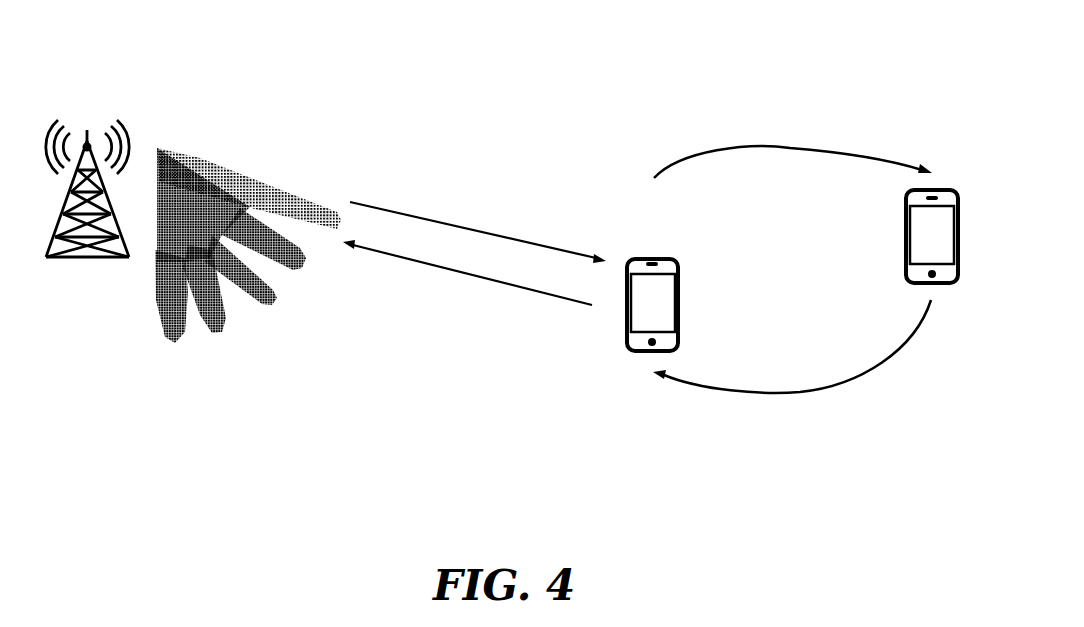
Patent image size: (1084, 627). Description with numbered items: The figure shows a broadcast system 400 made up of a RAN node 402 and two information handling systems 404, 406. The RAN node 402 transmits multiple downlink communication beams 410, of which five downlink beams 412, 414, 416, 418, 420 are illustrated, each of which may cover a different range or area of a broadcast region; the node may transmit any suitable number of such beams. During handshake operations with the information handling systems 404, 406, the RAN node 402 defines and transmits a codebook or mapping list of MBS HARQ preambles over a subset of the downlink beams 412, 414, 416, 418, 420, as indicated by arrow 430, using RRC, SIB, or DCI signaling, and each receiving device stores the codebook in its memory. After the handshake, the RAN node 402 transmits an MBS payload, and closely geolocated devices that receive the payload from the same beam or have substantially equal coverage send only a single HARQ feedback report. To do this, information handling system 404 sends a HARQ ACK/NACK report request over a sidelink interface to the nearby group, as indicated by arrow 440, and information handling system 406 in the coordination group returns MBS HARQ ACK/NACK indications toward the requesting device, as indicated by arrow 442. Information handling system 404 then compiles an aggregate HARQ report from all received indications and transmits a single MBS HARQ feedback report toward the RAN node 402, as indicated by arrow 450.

The broadcast system 400 is at (664, 74).
The RAN node 402 is at (79, 112).
The information handling system 404 is at (664, 262).
The information handling system 406 is at (912, 250).
The downlink communication beams 410 is at (242, 157).
The downlink beam 412 is at (307, 204).
The downlink beam 414 is at (300, 266).
The downlink beam 416 is at (272, 300).
The downlink beam 418 is at (220, 330).
The downlink beam 420 is at (172, 342).
The arrow 430 is at (508, 237).
The arrow 440 is at (790, 148).
The arrow 442 is at (762, 396).
The arrow 450 is at (545, 298).